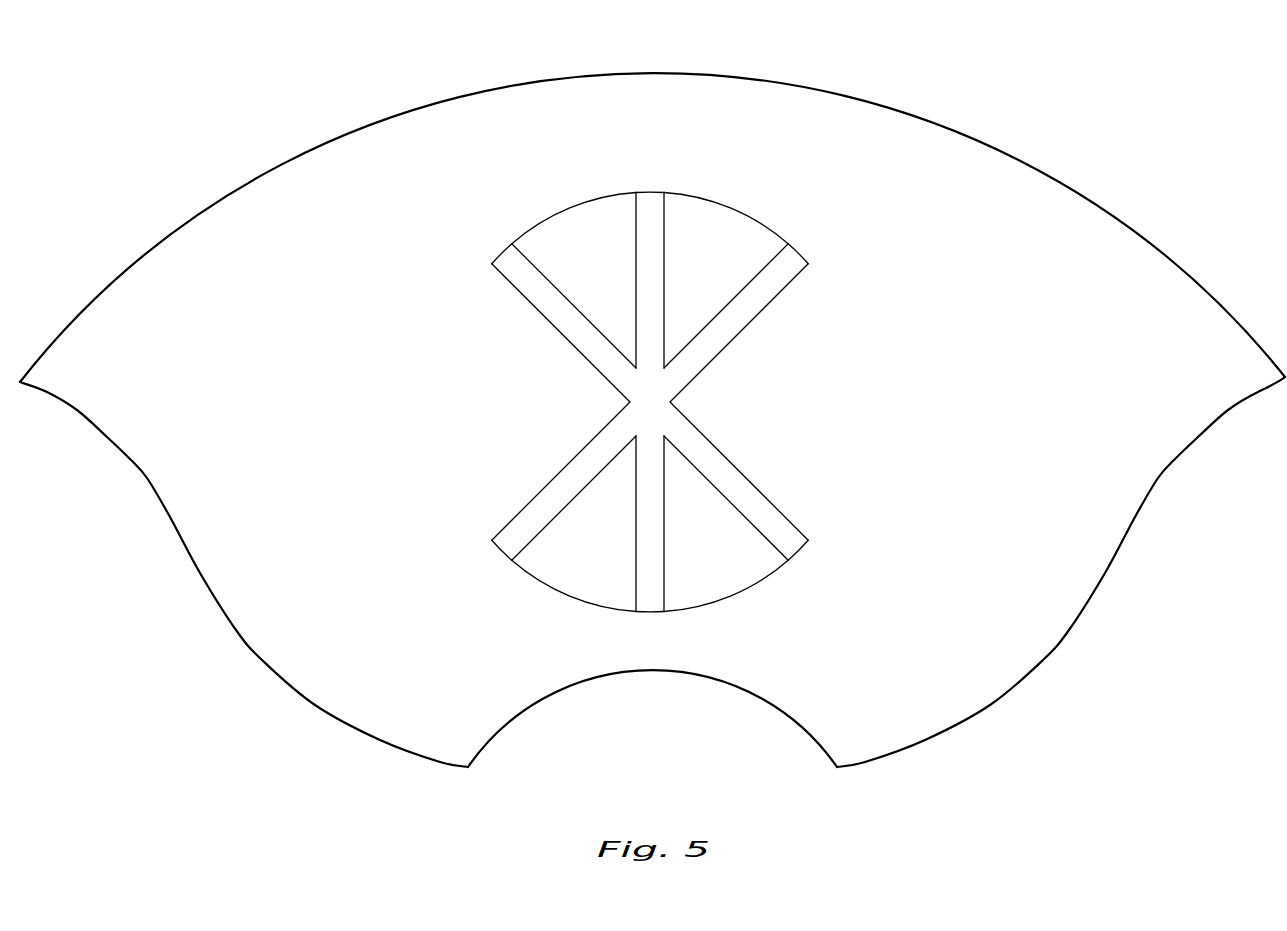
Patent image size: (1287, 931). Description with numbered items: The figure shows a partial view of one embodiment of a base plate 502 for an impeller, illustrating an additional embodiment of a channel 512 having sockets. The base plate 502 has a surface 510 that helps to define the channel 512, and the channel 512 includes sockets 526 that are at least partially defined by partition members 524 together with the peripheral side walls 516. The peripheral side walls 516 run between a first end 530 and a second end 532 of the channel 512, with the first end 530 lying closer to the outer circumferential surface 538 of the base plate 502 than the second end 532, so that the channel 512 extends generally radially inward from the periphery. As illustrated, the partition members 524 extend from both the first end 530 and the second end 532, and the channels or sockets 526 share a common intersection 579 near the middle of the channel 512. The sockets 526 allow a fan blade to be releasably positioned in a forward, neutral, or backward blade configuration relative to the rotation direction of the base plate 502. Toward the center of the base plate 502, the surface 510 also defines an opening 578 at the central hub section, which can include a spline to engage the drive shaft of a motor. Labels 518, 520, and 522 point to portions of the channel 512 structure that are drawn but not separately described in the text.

The base plate 502 is at (216, 109).
The surface 510 is at (818, 117).
The channel 512 is at (810, 400).
The peripheral side walls 516 is at (775, 297).
The edge of rib 518 is at (755, 318).
The rib edge 520 is at (700, 432).
The diagonal rib 522 is at (733, 481).
The partition members 524 is at (615, 282).
The sockets 526 is at (654, 253).
The first end 530 is at (650, 613).
The second end 532 is at (650, 192).
The outer circumferential surface 538 is at (650, 77).
The opening 578 is at (672, 770).
The common intersection 579 is at (648, 400).